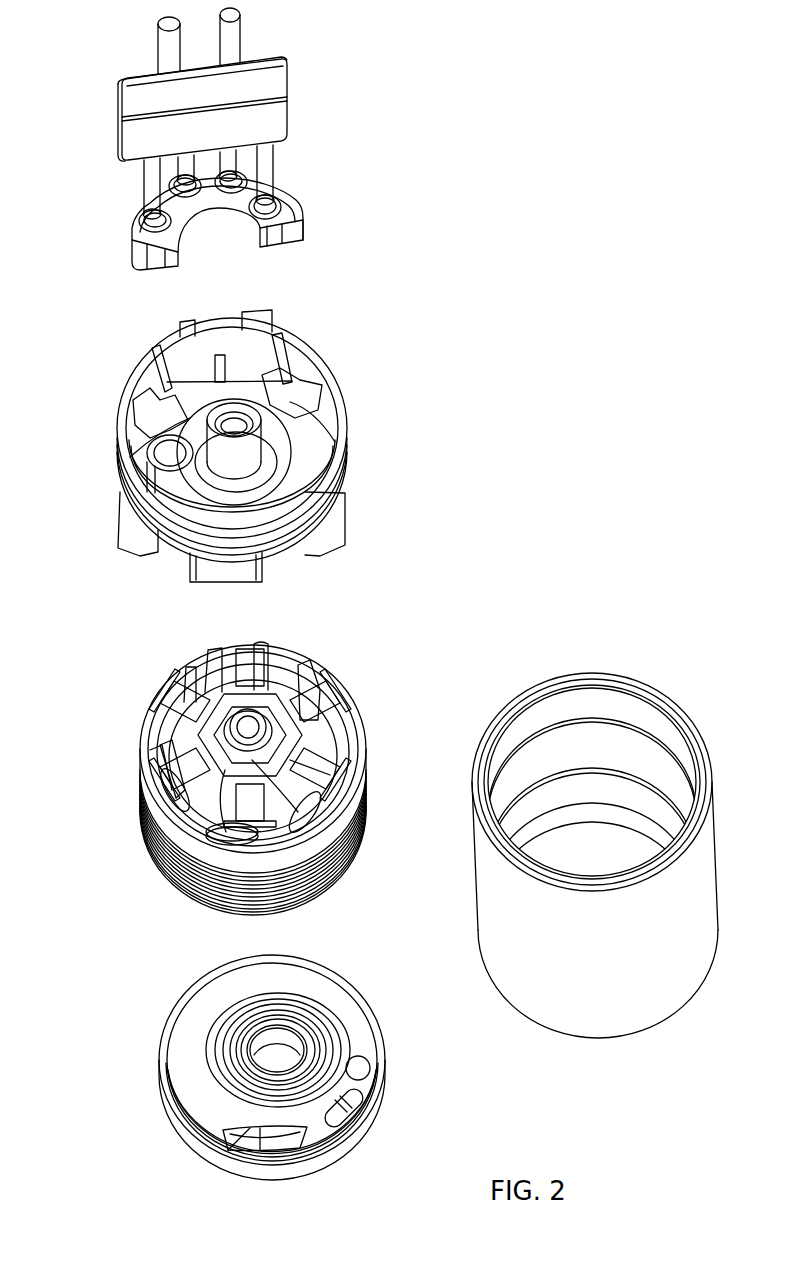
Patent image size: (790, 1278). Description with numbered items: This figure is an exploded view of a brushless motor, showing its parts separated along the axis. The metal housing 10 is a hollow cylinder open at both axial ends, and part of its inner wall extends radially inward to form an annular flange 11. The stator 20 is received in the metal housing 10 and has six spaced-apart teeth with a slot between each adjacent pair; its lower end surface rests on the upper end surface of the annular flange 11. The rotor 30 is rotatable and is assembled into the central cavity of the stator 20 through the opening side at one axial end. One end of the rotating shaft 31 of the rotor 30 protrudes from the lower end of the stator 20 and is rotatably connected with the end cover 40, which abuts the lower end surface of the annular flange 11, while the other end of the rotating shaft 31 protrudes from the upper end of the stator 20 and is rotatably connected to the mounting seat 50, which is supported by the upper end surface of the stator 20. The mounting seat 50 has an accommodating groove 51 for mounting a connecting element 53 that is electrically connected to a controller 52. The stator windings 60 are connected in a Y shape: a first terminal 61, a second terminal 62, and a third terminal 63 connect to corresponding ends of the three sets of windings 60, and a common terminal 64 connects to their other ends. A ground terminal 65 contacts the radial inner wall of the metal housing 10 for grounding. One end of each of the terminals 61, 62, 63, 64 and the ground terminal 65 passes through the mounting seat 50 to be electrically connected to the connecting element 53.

The metal housing 10 is at (595, 866).
The annular flange 11 is at (567, 797).
The stator 20 is at (219, 752).
The rotor 30 is at (226, 726).
The rotating shaft 31 is at (248, 714).
The end cover 40 is at (325, 1145).
The mounting seat 50 is at (300, 443).
The accommodating groove 51 is at (292, 388).
The controller 52 is at (262, 123).
The connecting element 53 is at (300, 233).
The stator windings 60 is at (155, 752).
The first terminal 61 is at (262, 643).
The second terminal 62 is at (210, 653).
The third terminal 63 is at (190, 680).
The common terminal 64 is at (298, 757).
The ground terminal 65 is at (318, 684).